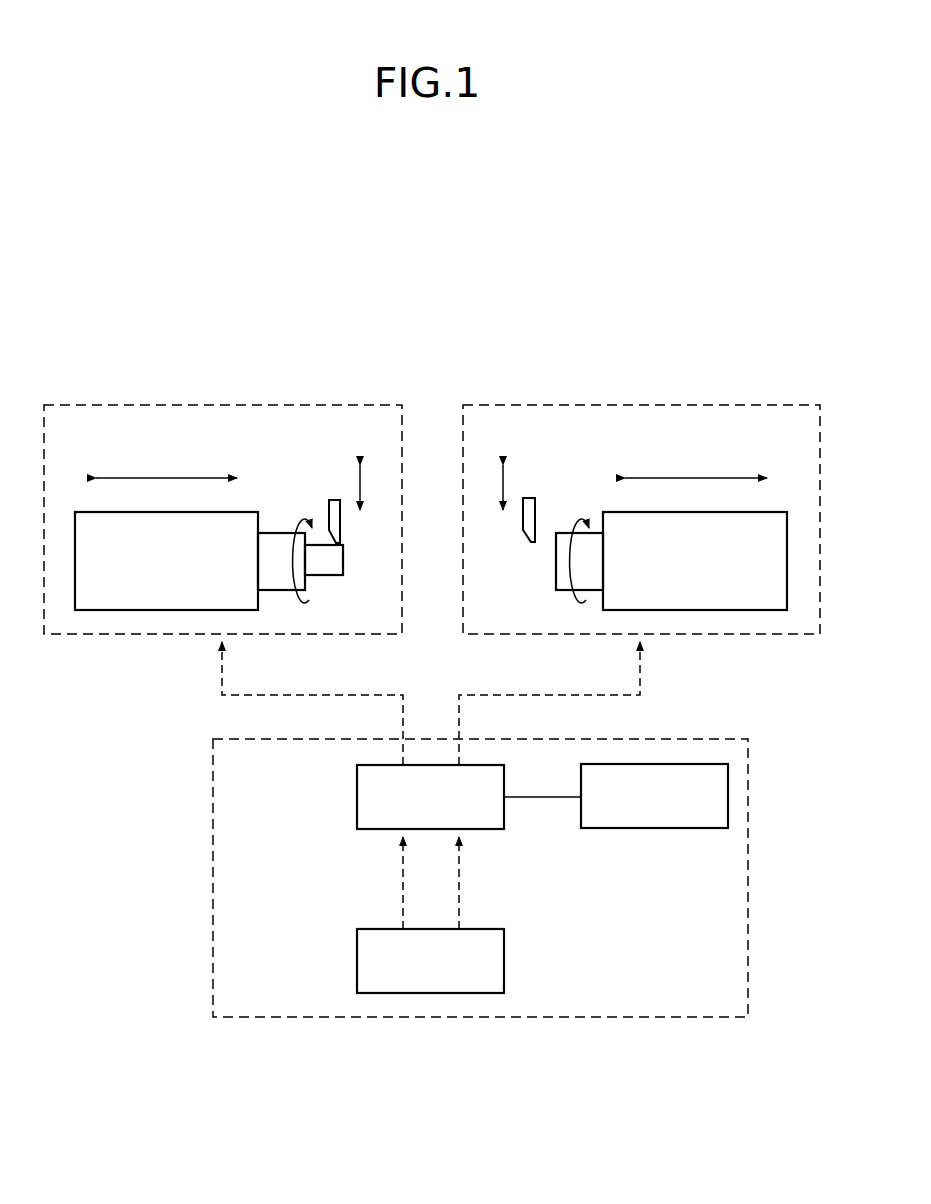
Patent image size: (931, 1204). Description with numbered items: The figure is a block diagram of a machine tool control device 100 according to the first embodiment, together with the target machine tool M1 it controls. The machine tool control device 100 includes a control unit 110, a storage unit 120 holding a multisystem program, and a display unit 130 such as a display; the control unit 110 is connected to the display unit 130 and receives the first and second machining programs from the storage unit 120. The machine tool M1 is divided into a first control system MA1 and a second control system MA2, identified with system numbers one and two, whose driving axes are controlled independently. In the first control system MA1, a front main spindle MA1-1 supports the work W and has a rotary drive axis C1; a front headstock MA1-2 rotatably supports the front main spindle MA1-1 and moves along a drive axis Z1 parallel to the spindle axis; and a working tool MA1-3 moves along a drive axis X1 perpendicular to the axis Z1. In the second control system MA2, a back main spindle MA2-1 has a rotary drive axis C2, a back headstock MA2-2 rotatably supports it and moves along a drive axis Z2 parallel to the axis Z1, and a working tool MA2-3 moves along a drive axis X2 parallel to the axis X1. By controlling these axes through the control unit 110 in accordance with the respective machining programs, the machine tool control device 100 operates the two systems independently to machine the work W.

The target machine tool M1 is at (567, 349).
The first control system MA1 is at (352, 402).
The second control system MA2 is at (512, 402).
The front main spindle MA1-1 is at (280, 575).
The front headstock MA1-2 is at (128, 573).
The working tool MA1-3 is at (337, 502).
The back main spindle MA2-1 is at (565, 580).
The back headstock MA2-2 is at (737, 573).
The working tool MA2-3 is at (532, 500).
The work W is at (327, 567).
The rotary drive axis C1 is at (304, 547).
The rotary drive axis C2 is at (581, 547).
The moving drive axis Z1 is at (166, 465).
The moving drive axis Z2 is at (696, 465).
The moving drive axis X1 is at (359, 468).
The moving drive axis X2 is at (504, 469).
The machine tool control device 100 is at (748, 848).
The control unit 110 is at (507, 778).
The storage unit 120 is at (507, 942).
The display unit 130 is at (728, 780).